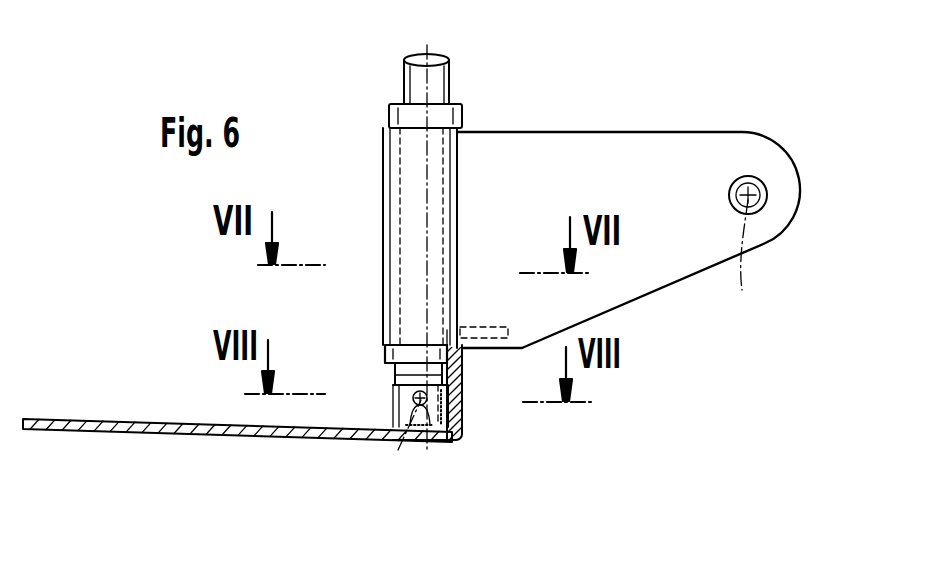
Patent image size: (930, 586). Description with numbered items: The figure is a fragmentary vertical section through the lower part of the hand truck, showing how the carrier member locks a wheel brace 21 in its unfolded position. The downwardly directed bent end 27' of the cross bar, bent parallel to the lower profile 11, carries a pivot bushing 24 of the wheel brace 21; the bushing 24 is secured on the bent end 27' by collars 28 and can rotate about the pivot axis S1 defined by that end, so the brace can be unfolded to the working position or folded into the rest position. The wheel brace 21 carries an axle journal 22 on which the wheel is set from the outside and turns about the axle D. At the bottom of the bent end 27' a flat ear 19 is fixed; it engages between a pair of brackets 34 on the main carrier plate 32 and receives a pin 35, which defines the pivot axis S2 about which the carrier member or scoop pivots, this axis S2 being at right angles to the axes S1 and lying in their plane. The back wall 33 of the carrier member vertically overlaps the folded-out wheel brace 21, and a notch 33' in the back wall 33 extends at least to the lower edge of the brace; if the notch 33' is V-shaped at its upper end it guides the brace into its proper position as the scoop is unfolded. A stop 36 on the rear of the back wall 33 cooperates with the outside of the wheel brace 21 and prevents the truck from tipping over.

The lower profile 11 is at (413, 75).
The bent end of cross bar 27' is at (426, 79).
The ear 19 is at (393, 382).
The wheel brace 21 is at (568, 183).
The axle journal 22 is at (738, 180).
The pivot bushing 24 is at (405, 190).
The collar 28 is at (392, 116).
The main carrier plate 32 is at (135, 418).
The back wall 33 is at (489, 401).
The notch 33' is at (388, 305).
The bracket 34 is at (462, 425).
The pin 35 is at (427, 436).
The stop 36 is at (492, 327).
The pivot axis of wheel brace S1 is at (428, 48).
The pivot axis of carrier member S2 is at (400, 450).
The wheel axle D is at (744, 260).